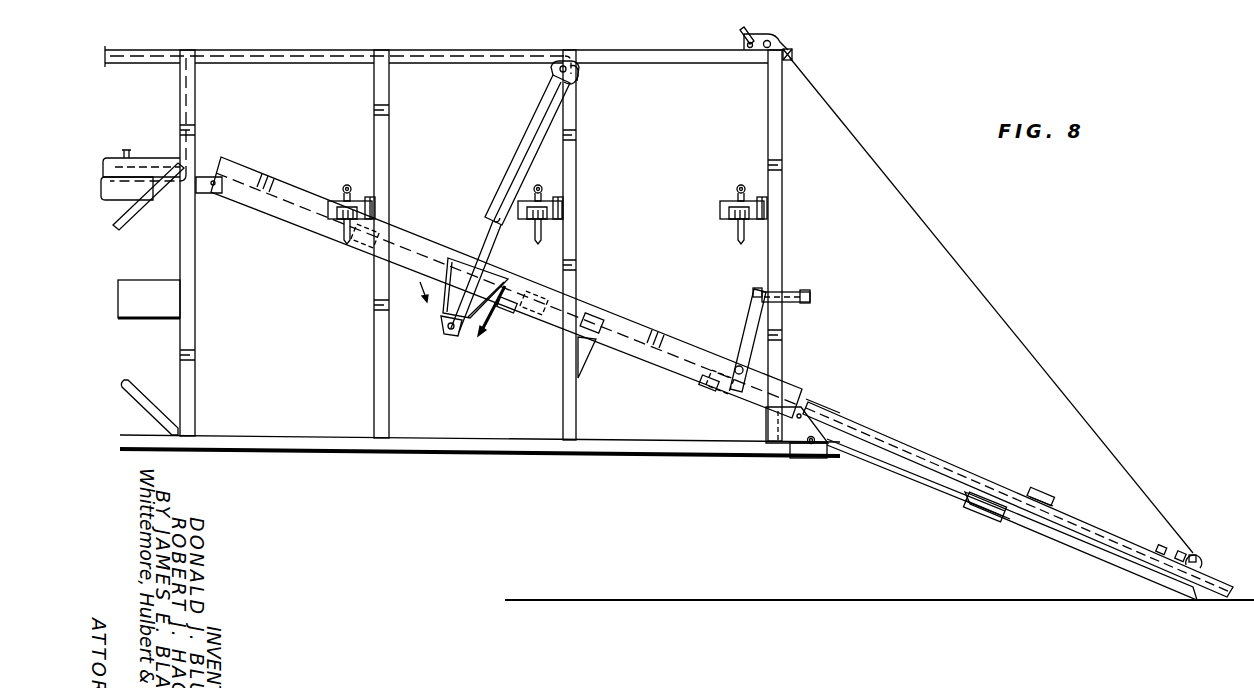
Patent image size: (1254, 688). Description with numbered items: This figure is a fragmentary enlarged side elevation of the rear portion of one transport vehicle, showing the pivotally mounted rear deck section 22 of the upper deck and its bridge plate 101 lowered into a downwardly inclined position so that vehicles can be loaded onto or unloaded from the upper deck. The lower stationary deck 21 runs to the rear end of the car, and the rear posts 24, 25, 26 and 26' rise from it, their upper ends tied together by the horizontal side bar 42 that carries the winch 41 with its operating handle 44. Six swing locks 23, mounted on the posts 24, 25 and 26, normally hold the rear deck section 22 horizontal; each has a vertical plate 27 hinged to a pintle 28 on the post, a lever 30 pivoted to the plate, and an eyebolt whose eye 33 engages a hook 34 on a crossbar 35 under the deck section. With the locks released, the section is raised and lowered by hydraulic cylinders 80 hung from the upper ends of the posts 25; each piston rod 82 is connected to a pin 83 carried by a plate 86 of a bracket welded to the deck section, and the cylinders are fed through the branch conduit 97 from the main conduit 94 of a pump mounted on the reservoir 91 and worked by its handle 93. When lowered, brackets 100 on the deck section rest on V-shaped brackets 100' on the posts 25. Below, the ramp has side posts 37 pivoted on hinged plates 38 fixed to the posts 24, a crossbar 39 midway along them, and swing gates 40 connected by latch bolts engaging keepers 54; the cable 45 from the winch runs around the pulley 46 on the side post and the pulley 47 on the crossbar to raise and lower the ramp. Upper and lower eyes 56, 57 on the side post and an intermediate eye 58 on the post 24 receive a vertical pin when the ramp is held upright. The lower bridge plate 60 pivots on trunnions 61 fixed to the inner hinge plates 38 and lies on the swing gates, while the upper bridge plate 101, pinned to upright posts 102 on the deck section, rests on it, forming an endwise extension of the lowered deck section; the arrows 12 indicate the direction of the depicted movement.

The direction arrow 12 is at (458, 321).
The lower stationary deck 21 is at (440, 438).
The rear deck section 22 is at (292, 216).
The swing lock 23 is at (370, 191).
The rear post 24 is at (779, 362).
The post 25 is at (562, 396).
The post 26 is at (354, 244).
The post 26' is at (206, 243).
The vertical plate 27 is at (330, 200).
The vertical pintle 28 is at (374, 208).
The lever 30 is at (342, 237).
The eye 33 is at (351, 179).
The hook 34 is at (511, 311).
The crossbar 35 is at (352, 250).
The side post 37 is at (960, 465).
The hinged plate 38 is at (798, 464).
The crossbar 39 is at (1027, 524).
The swing gate 40 is at (1123, 563).
The winch 41 is at (740, 45).
The horizontal side bar 42 is at (677, 62).
The operating handle 44 is at (751, 30).
The cable 45 is at (1093, 426).
The pulley 46 is at (1198, 554).
The pulley 47 is at (1053, 484).
The keeper 54 is at (1005, 518).
The upper eye 56 is at (1180, 550).
The lower eye 57 is at (1158, 546).
The intermediate eye 58 is at (794, 54).
The bridge plate 60 is at (877, 458).
The trunnion 61 is at (796, 292).
The hydraulic cylinder 80 is at (531, 143).
The piston rod 82 is at (489, 232).
The pin 83 is at (441, 326).
The plate 86 is at (453, 338).
The reservoir 91 is at (126, 220).
The operating handle 93 is at (142, 134).
The main conduit 94 is at (167, 168).
The branch conduit 97 is at (327, 58).
The bracket 100 is at (613, 309).
The V-shaped bracket 100' is at (611, 362).
The bridge plate 101 is at (820, 400).
The upright post 102 is at (740, 334).